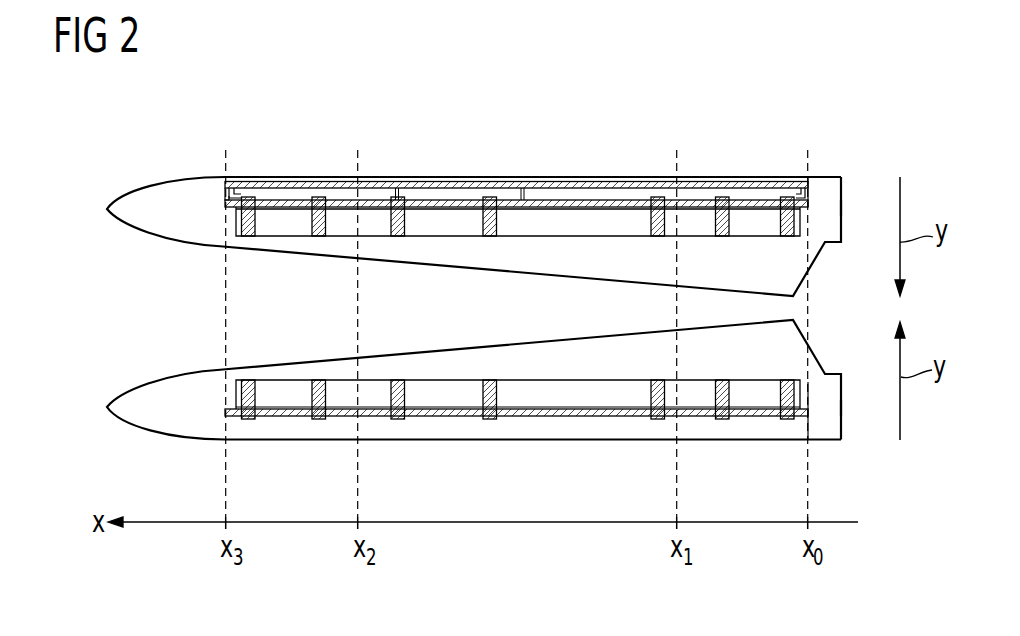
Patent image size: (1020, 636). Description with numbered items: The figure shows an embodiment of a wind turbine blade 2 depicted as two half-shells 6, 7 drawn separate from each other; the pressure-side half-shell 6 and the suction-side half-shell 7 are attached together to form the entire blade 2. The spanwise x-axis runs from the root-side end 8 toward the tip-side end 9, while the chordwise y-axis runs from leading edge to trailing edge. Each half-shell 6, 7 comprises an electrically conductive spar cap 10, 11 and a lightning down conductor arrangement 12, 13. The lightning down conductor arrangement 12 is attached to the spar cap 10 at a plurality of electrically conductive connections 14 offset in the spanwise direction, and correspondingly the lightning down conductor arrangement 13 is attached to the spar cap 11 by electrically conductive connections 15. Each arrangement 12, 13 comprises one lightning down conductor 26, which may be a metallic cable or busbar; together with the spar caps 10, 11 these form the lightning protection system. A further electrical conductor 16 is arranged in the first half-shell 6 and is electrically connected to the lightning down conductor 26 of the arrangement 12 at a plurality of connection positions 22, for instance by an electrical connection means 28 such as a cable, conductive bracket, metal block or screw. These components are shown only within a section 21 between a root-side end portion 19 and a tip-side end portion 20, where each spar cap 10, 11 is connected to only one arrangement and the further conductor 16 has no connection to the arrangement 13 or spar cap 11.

The wind turbine blade 2 is at (756, 114).
The pressure-side half-shell 6 is at (152, 184).
The suction-side half-shell 7 is at (152, 378).
The root-side end 8 is at (840, 208).
The tip-side end 9 is at (108, 210).
The spar cap 10 is at (276, 226).
The spar cap 11 is at (275, 397).
The lightning down conductor arrangement 12 is at (372, 203).
The lightning down conductor arrangement 13 is at (373, 414).
The electrically conductive connections 14 is at (316, 228).
The electrically conductive connections 15 is at (315, 408).
The further electrical conductor 16 is at (442, 185).
The root-side end portion 19 is at (823, 183).
The tip-side end portion 20 is at (187, 193).
The section 21 is at (545, 178).
The connection positions 22 is at (241, 182).
The lightning down conductor 26 is at (518, 311).
The electrical connection means 28 is at (240, 197).